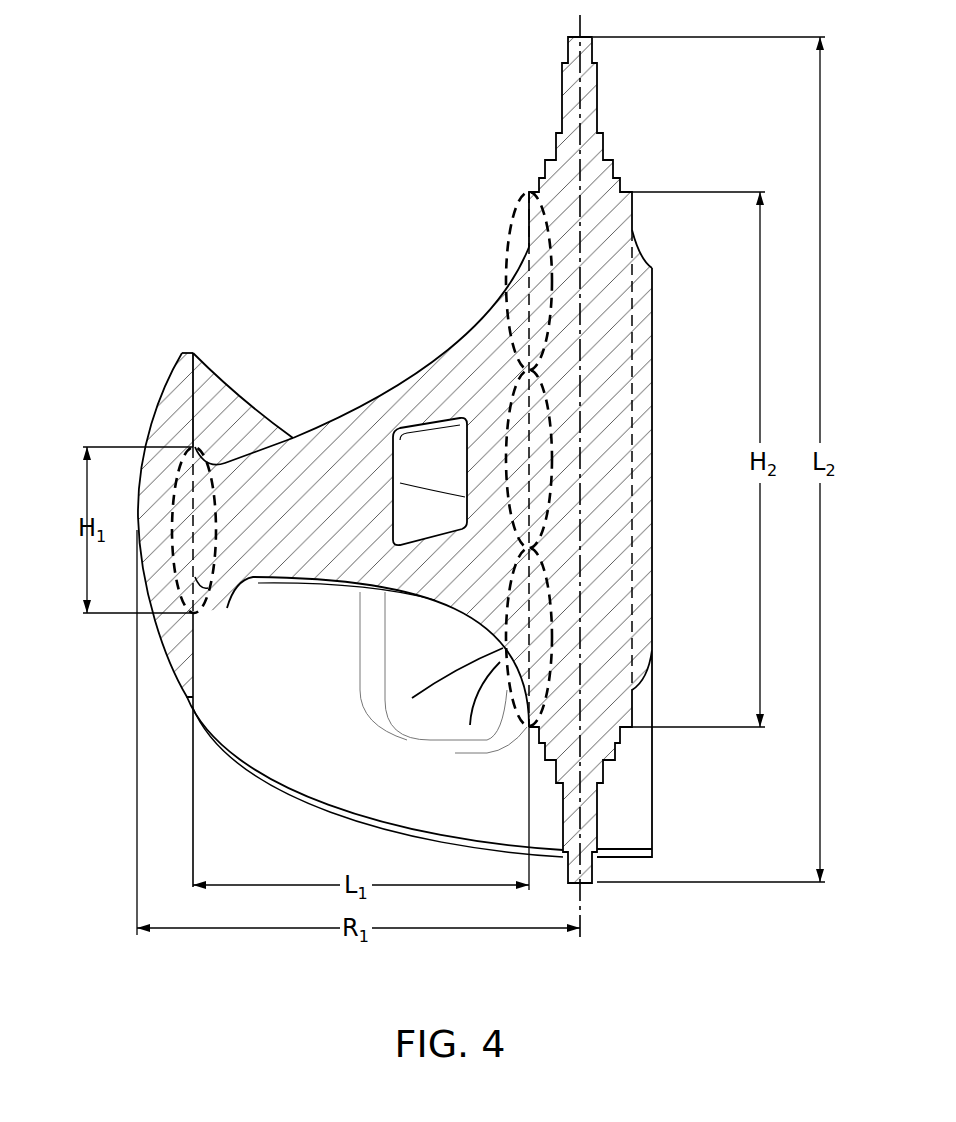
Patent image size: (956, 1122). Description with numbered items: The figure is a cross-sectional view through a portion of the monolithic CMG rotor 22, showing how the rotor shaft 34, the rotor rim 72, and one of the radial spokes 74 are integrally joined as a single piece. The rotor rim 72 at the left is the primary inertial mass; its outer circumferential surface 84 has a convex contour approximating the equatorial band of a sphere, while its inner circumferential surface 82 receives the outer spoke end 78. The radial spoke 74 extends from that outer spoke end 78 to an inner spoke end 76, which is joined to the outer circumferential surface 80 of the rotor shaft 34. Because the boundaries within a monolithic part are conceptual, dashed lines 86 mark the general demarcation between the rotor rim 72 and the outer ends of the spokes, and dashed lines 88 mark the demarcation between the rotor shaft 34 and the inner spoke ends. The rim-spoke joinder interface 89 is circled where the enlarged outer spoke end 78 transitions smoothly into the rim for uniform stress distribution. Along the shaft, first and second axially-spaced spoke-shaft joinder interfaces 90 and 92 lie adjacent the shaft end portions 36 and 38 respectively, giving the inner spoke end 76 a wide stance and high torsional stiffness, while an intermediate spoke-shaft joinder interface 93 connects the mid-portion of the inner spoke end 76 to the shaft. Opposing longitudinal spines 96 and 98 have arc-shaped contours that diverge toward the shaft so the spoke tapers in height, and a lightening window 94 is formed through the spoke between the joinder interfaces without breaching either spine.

The monolithic CMG rotor 22 is at (210, 136).
The rotor shaft 34 is at (612, 404).
The shaft end portion 36 is at (590, 103).
The shaft end portion 38 is at (588, 812).
The rotor rim 72 is at (136, 406).
The radial spoke 74 is at (338, 400).
The inner spoke end 76 is at (497, 379).
The outer spoke end 78 is at (231, 525).
The outer circumferential surface 80 is at (641, 258).
The inner circumferential surface 82 is at (233, 395).
The outer circumferential surface 84 is at (175, 378).
The dashed lines 86 is at (527, 418).
The dashed lines 88 is at (210, 588).
The rim-spoke joinder interface 89 is at (172, 505).
The spoke-shaft joinder interface 90 is at (500, 232).
The spoke-shaft joinder interface 92 is at (488, 622).
The intermediate spoke-shaft joinder interface 93 is at (513, 530).
The window 94 is at (410, 468).
The spine 96 is at (404, 381).
The spine 98 is at (326, 583).